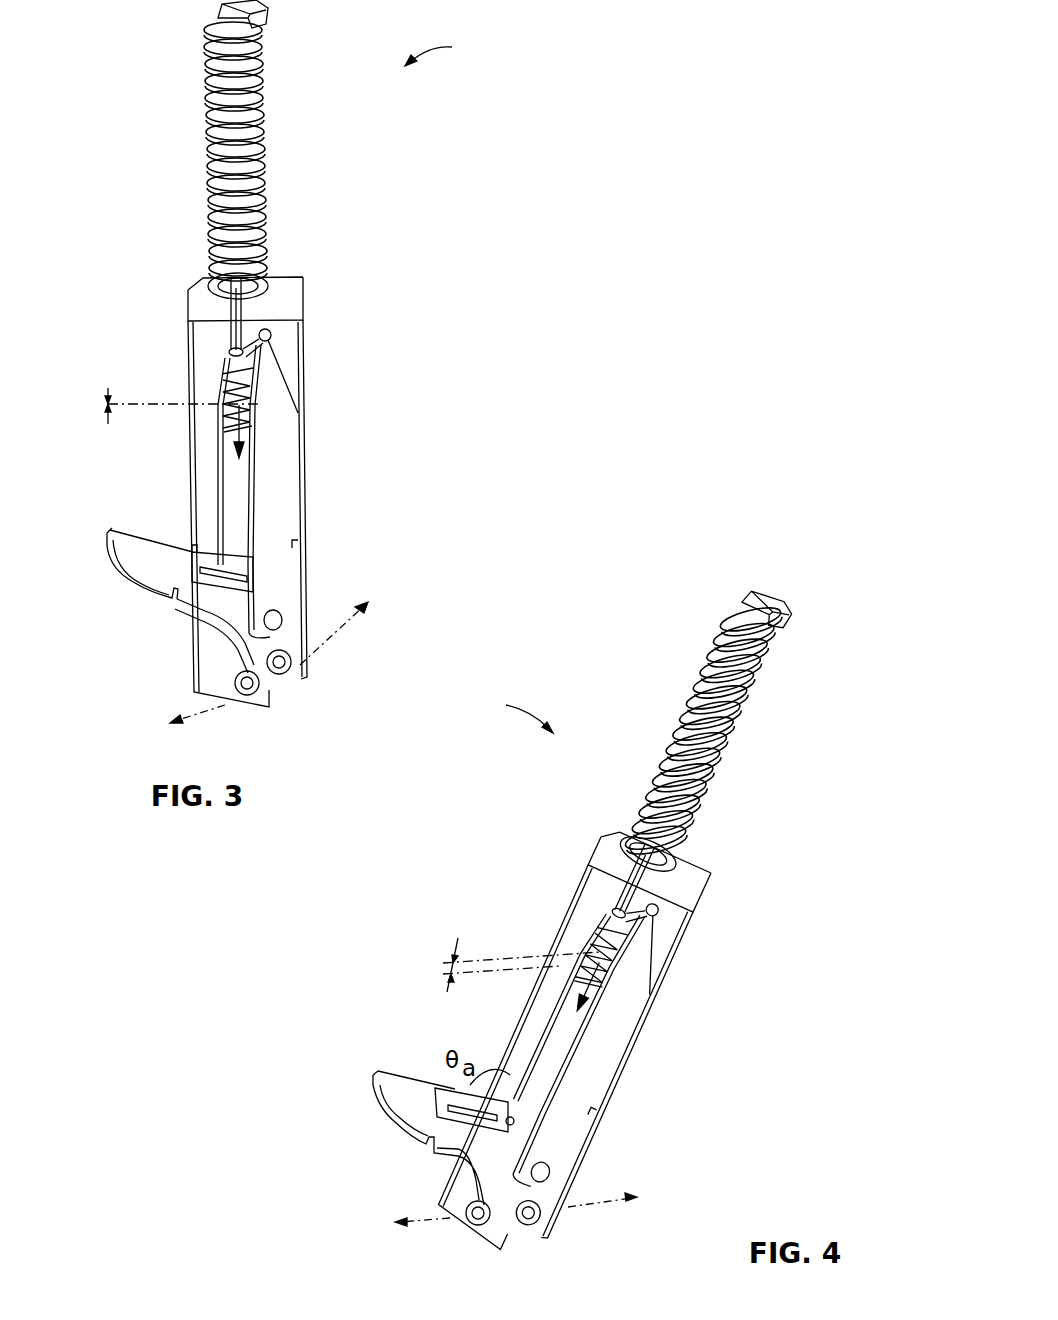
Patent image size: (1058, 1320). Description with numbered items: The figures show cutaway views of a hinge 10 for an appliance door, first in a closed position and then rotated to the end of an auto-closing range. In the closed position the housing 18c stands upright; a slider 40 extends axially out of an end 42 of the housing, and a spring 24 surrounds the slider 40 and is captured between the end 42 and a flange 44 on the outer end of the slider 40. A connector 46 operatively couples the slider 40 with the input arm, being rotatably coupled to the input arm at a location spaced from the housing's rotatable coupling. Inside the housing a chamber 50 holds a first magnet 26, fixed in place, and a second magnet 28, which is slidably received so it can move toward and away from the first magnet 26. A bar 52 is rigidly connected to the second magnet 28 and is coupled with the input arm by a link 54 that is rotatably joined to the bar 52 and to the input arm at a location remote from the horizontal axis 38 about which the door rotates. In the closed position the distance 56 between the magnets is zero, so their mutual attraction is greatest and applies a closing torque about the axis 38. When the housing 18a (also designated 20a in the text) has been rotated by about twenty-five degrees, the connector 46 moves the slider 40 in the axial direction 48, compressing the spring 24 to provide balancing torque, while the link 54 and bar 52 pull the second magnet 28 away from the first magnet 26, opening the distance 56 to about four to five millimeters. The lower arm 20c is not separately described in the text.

In FIG. 3, the hinge 10 is at (446, 47).
In FIG. 4, the hinge 10 is at (511, 711).
In FIG. 4, the housing 18a is at (670, 936).
In FIG. 3, the housing 18c is at (296, 345).
In FIG. 4, the housing 20a is at (405, 1112).
In FIG. 3, the paddle 20c is at (140, 572).
In FIG. 3, the spring 24 is at (205, 46).
In FIG. 4, the spring 24 is at (745, 732).
In FIG. 3, the first magnet 26 is at (218, 405).
In FIG. 4, the first magnet 26 is at (580, 962).
In FIG. 3, the second magnet 28 is at (243, 408).
In FIG. 4, the second magnet 28 is at (588, 980).
In FIG. 3, the horizontal axis 38 is at (290, 662).
In FIG. 4, the horizontal axis 38 is at (585, 1207).
In FIG. 3, the slider 40 is at (262, 165).
In FIG. 4, the slider 40 is at (620, 903).
In FIG. 3, the end of housing 42 is at (290, 272).
In FIG. 4, the end of housing 42 is at (700, 870).
In FIG. 3, the flange 44 is at (270, 22).
In FIG. 4, the flange 44 is at (795, 632).
In FIG. 3, the connector 46 is at (290, 480).
In FIG. 4, the connector 46 is at (620, 1025).
In FIG. 3, the axial direction 48 is at (230, 440).
In FIG. 4, the axial direction 48 is at (610, 1060).
In FIG. 3, the chamber 50 is at (210, 458).
In FIG. 3, the bar 52 is at (250, 470).
In FIG. 4, the bar 52 is at (592, 1085).
In FIG. 3, the link 54 is at (215, 556).
In FIG. 4, the link 54 is at (500, 1078).
In FIG. 3, the distance 56 is at (104, 412).
In FIG. 4, the distance 56 is at (453, 928).